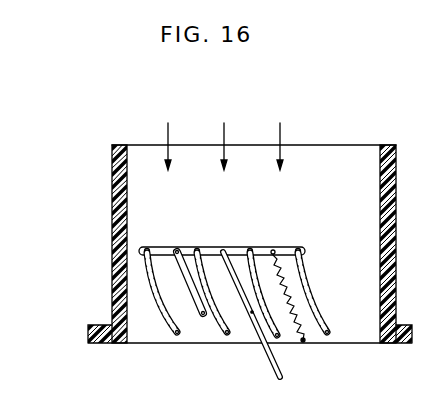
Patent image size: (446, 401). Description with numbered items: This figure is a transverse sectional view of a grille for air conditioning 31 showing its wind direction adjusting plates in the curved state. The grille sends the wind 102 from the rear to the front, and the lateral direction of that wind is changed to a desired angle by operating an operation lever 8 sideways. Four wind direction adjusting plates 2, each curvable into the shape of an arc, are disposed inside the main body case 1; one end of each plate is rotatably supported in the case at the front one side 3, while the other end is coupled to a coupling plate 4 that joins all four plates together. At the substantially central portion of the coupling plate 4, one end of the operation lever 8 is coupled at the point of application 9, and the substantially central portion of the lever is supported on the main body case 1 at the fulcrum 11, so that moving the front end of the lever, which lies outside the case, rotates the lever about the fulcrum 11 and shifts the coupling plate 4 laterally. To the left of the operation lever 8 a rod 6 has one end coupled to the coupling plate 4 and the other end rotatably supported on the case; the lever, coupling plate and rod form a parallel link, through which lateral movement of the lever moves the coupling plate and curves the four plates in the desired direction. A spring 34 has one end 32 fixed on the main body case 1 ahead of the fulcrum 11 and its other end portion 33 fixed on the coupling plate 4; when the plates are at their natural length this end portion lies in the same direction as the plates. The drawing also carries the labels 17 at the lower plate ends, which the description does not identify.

The main body case 1 is at (398, 180).
The grille for air conditioning 31 is at (96, 181).
The wind 102 is at (290, 126).
The point of application 9 is at (221, 247).
The front one side 3 is at (301, 247).
The coupling plate 4 is at (285, 247).
The wind direction adjusting plate 2 is at (307, 279).
The spring 34 is at (309, 297).
The arm tips 17 is at (330, 331).
The rod 6 is at (175, 247).
The operation lever 8 is at (262, 348).
The fulcrum 11 is at (251, 311).
The other end portion of spring 33 is at (273, 247).
The one end of spring 32 is at (305, 341).